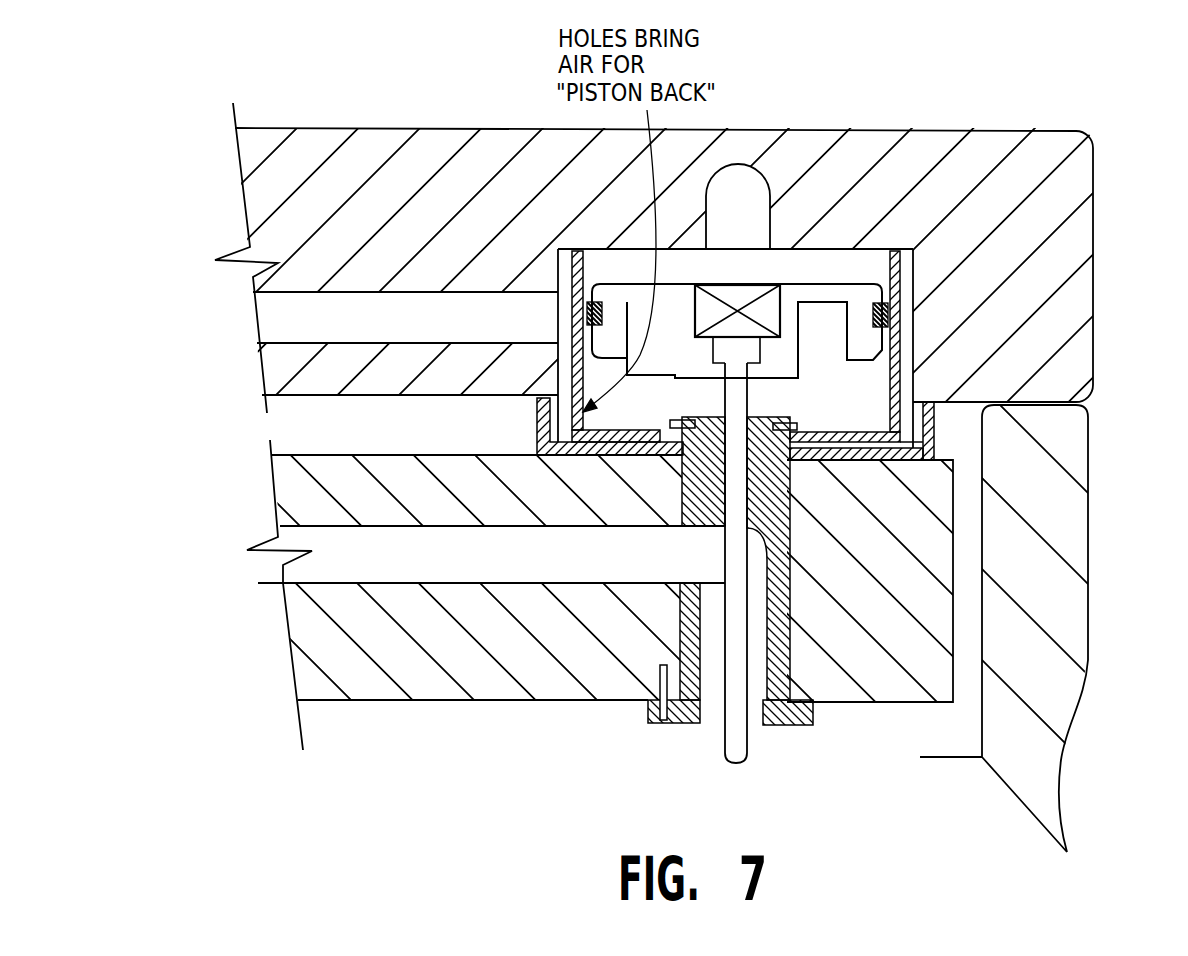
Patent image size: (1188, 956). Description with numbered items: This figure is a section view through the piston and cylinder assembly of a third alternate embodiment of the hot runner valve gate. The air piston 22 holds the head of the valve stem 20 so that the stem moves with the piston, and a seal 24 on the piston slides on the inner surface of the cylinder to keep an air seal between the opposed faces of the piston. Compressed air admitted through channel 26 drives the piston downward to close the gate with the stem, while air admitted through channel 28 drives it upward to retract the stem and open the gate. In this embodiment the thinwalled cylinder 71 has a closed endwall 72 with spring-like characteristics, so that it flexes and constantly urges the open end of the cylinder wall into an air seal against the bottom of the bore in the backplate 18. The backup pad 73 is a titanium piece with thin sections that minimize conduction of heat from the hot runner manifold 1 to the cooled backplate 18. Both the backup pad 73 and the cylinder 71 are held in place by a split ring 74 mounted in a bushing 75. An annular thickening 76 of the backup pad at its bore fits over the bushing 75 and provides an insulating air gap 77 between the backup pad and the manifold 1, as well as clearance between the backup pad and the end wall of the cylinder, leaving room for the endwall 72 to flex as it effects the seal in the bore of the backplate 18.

The hot runner manifold 1 is at (470, 680).
The backplate 18 is at (1057, 210).
The valve stem 20 is at (723, 747).
The air piston 22 is at (860, 303).
The seal 24 is at (895, 312).
The channel 26 is at (762, 237).
The channel 28 is at (278, 319).
The thinwalled cylinder 71 is at (902, 362).
The closed endwall 72 is at (842, 428).
The backup pad 73 is at (935, 433).
The split ring 74 is at (797, 423).
The bushing 75 is at (773, 707).
The annular thickening 76 is at (800, 462).
The insulating air gap 77 is at (893, 462).